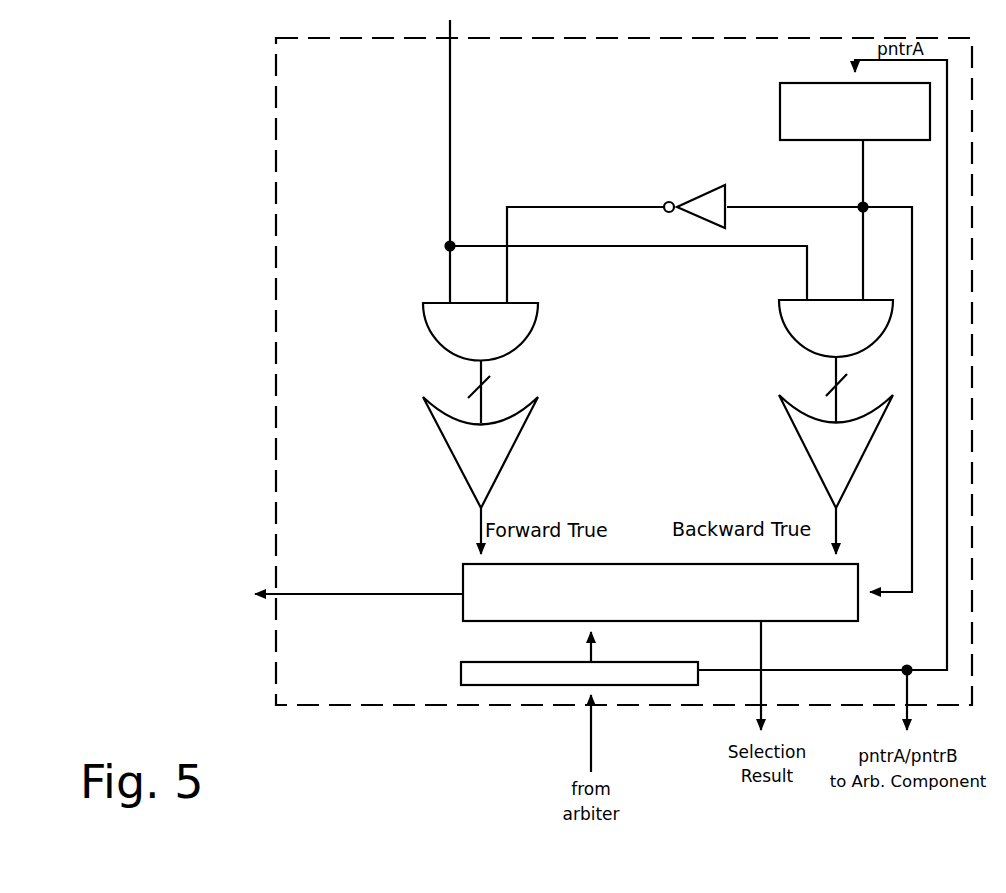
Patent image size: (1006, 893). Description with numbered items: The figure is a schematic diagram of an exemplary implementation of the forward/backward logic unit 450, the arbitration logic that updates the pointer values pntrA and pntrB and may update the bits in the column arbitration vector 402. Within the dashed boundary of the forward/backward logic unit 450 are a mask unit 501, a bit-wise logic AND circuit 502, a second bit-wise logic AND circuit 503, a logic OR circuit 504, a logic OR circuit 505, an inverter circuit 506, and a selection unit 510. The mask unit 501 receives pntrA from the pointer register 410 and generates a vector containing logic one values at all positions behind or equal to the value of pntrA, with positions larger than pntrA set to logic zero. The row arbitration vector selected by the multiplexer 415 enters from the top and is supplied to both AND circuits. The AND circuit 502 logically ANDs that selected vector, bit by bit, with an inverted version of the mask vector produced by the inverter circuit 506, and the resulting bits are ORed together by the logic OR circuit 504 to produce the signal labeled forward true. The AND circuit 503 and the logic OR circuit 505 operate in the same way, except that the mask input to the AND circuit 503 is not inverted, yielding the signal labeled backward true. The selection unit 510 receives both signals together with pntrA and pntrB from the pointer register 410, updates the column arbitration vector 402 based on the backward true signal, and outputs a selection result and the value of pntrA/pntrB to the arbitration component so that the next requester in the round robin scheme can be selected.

The forward/backward logic unit 450 is at (292, 40).
The mask unit 501 is at (781, 84).
The bit-wise logic AND circuit 502 is at (537, 303).
The bit-wise logic AND circuit 503 is at (787, 336).
The logic OR circuit 504 is at (537, 399).
The logic OR circuit 505 is at (784, 398).
The inverter circuit 506 is at (700, 197).
The selection unit 510 is at (463, 565).
The pointer register 410 is at (548, 687).
The column arbitration vector 402 is at (292, 598).
The multiplexer 415 is at (459, 151).